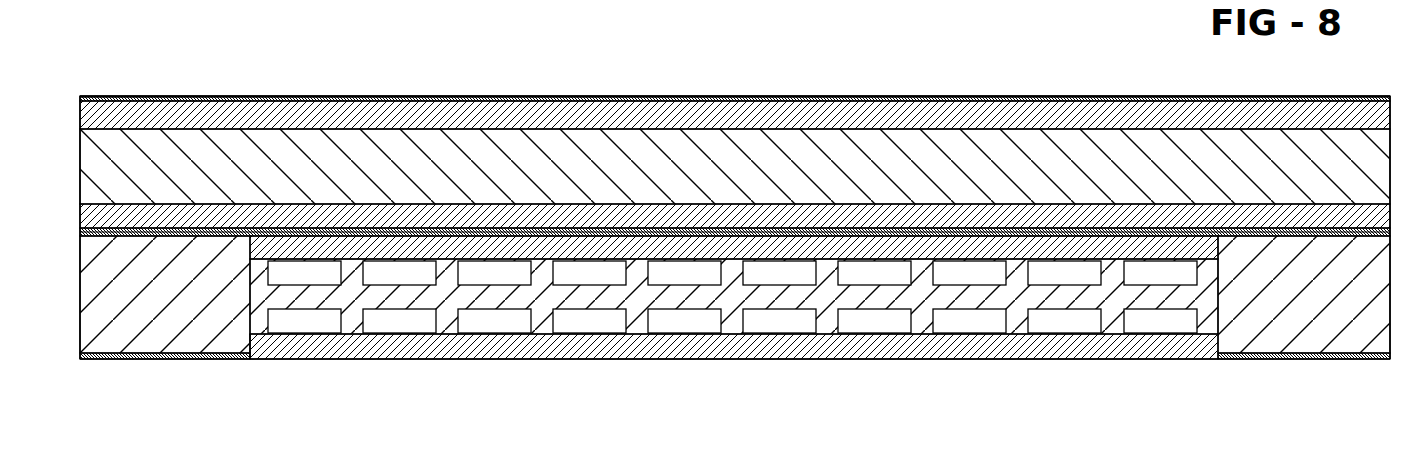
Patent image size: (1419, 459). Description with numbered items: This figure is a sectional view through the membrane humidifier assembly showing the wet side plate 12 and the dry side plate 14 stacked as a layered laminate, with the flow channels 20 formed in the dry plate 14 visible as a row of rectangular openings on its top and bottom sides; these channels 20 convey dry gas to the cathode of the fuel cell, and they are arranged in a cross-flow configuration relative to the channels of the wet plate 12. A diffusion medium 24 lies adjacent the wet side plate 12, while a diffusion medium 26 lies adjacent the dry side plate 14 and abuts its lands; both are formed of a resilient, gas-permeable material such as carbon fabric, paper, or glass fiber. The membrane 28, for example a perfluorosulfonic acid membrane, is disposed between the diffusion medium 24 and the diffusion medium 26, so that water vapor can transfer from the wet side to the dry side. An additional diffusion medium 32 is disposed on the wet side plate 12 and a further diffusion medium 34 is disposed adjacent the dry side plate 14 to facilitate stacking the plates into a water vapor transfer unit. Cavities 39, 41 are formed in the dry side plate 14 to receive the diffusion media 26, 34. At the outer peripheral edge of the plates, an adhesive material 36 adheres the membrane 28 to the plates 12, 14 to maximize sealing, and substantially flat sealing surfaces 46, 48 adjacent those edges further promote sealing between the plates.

The wet plate 12 is at (1392, 140).
The dry plate 14 is at (1393, 295).
The flow channels 20 is at (1158, 268).
The diffusion medium 24 is at (307, 215).
The diffusion medium 26 is at (585, 248).
The membrane 28 is at (465, 233).
The diffusion medium 32 is at (380, 117).
The diffusion medium 34 is at (470, 350).
The adhesive material 36 is at (197, 232).
The cavity 39 is at (253, 245).
The cavity 41 is at (268, 345).
The sealing surface 46 is at (120, 224).
The sealing surface 48 is at (175, 355).